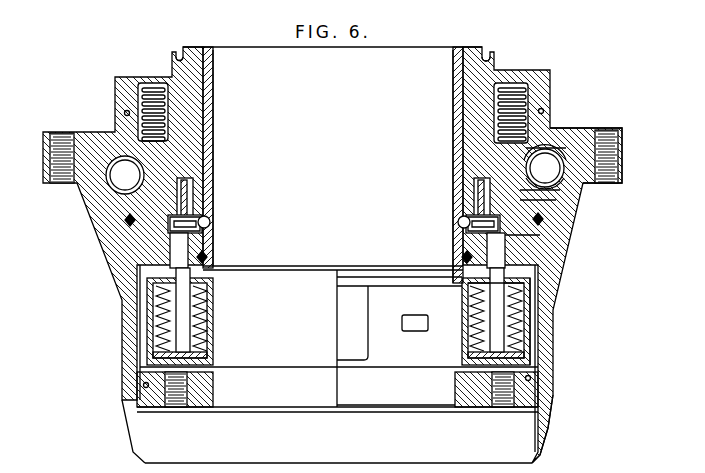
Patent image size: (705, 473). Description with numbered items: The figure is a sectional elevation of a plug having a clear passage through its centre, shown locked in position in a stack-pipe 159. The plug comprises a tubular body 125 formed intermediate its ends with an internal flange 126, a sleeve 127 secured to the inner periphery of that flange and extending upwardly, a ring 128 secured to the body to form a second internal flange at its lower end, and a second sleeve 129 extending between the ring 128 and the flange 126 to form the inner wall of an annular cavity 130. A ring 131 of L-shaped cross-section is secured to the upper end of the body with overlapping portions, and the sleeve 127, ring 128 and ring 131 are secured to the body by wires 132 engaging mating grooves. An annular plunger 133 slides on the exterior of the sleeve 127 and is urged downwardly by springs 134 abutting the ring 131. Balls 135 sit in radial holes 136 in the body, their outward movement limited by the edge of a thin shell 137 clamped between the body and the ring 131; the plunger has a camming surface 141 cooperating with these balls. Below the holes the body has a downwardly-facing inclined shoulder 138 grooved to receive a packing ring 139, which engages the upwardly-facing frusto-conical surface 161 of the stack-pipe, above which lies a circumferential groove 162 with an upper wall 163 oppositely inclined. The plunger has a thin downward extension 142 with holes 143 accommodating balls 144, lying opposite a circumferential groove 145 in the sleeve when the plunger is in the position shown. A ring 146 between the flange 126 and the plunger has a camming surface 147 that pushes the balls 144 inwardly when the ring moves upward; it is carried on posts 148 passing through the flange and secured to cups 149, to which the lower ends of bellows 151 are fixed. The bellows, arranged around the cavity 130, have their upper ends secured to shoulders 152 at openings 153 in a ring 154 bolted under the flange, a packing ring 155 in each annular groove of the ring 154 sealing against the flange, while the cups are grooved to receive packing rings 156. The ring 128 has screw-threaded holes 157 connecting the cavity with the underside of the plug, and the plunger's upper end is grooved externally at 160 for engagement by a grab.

The tubular body 125 is at (546, 212).
The internal flange 126 is at (464, 255).
The sleeve 127 is at (452, 117).
The ring 128 is at (455, 407).
The second sleeve 129 is at (215, 332).
The annular cavity 130 is at (155, 366).
The ring of L-shape 131 is at (551, 80).
The wires 132 is at (546, 110).
The annular plunger 133 is at (455, 90).
The springs 134 is at (152, 90).
The balls 135 is at (548, 172).
The radial holes 136 is at (550, 205).
The thin shell 137 is at (545, 148).
The inclined shoulder 138 is at (541, 222).
The packing ring 139 is at (535, 243).
The camming surface 141 is at (562, 182).
The downward extension 142 is at (462, 224).
The holes 143 is at (478, 193).
The balls 144 is at (472, 212).
The circumferential groove 145 is at (212, 228).
The ring 146 is at (145, 225).
The camming surface 147 is at (212, 212).
The posts 148 is at (495, 252).
The cups 149 is at (535, 352).
The bellows 151 is at (455, 338).
The shoulders 152 is at (545, 295).
The openings 153 is at (532, 305).
The ring 154 is at (355, 299).
The packing ring 155 is at (458, 290).
The packing rings 156 is at (455, 320).
The screw-threaded holes 157 is at (505, 387).
The stack-pipe 159 is at (550, 420).
The groove 160 is at (493, 60).
The frusto-conical surface 161 is at (557, 195).
The circumferential groove 162 is at (620, 153).
The upper wall 163 is at (600, 130).